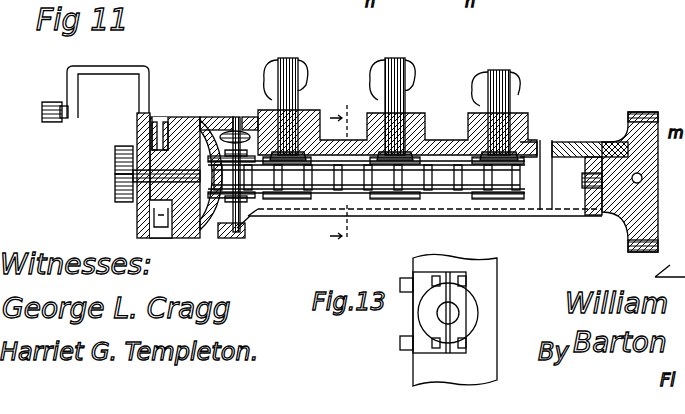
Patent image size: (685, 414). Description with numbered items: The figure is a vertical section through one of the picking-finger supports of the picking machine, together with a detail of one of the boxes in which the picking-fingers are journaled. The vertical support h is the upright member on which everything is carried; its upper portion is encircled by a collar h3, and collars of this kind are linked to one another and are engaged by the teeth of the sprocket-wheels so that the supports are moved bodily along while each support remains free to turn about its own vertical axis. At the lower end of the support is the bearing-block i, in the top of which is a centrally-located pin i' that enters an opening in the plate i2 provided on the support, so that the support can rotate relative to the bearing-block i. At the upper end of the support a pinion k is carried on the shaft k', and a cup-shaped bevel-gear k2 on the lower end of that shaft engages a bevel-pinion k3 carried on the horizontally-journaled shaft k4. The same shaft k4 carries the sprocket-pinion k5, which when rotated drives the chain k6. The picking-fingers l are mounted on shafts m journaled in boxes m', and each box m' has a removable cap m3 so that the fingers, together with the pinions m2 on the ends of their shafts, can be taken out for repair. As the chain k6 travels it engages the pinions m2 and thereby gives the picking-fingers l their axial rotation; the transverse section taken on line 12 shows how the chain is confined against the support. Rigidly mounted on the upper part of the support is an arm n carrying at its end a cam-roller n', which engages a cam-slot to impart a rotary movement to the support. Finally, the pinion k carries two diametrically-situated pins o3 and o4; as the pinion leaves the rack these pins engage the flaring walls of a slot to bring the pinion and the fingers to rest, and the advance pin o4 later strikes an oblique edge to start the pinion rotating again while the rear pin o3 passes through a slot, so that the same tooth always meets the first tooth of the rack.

In FIG. 11, the arm n is at (114, 146).
In FIG. 11, the cam-roller n' is at (55, 122).
In FIG. 11, the pinion k is at (181, 157).
In FIG. 11, the shaft k' is at (158, 206).
In FIG. 11, the cup-shaped bevel-gear k2 is at (208, 230).
In FIG. 11, the bevel-pinion k3 is at (240, 128).
In FIG. 11, the horizontally-journaled shaft k4 is at (250, 221).
In FIG. 11, the sprocket-pinion k5 is at (218, 128).
In FIG. 11, the chain k6 is at (433, 195).
In FIG. 11, the vertical support h is at (450, 137).
In FIG. 13, the vertical support h is at (436, 322).
In FIG. 11, the collar h3 is at (160, 130).
In FIG. 11, the pin o3 is at (115, 158).
In FIG. 11, the pin o4 is at (115, 191).
In FIG. 11, the picking-finger l is at (373, 63).
In FIG. 11, the shaft m is at (397, 109).
In FIG. 11, the box m' is at (564, 121).
In FIG. 13, the box m' is at (483, 312).
In FIG. 11, the pinion m2 is at (397, 200).
In FIG. 13, the removable cap m3 is at (418, 328).
In FIG. 11, the section line 12 is at (346, 169).
In FIG. 11, the bearing-block i is at (621, 189).
In FIG. 11, the pin i' is at (568, 193).
In FIG. 11, the plate i2 is at (588, 212).